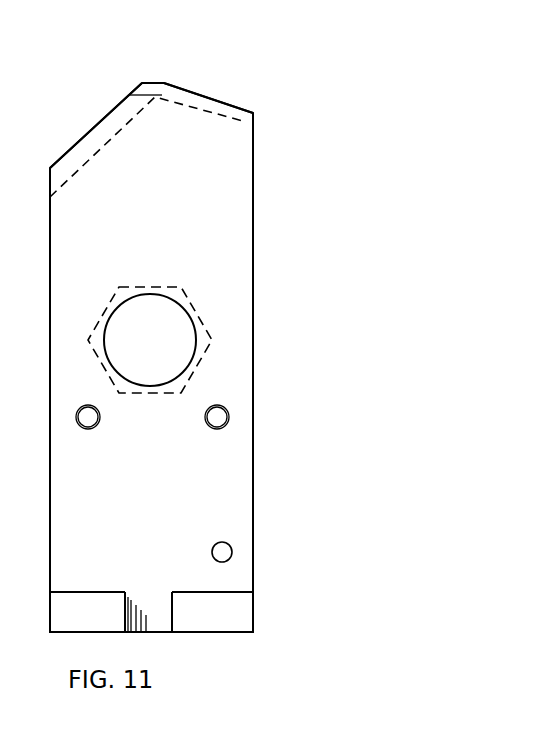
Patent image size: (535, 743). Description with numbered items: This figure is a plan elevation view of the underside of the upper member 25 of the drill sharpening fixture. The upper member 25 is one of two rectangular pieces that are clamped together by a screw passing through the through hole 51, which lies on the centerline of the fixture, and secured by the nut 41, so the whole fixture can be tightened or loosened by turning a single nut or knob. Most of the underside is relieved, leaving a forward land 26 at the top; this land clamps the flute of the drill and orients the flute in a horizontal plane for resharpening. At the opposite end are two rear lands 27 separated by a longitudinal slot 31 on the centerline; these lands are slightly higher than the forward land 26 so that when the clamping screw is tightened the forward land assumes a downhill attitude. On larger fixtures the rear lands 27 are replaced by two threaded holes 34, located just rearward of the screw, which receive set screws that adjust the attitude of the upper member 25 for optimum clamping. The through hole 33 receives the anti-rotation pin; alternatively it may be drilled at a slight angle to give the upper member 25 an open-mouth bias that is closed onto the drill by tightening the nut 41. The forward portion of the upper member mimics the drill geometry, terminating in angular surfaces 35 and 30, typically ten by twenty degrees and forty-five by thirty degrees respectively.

The upper fixture member 25 is at (242, 193).
The forward land 26 is at (152, 92).
The rear lands 27 is at (230, 608).
The angular surface 30 is at (252, 110).
The longitudinal slot 31 is at (157, 603).
The through hole 33 is at (232, 552).
The threaded holes 34 is at (229, 423).
The angular surface 35 is at (97, 127).
The nut 41 is at (198, 318).
The through hole 51 is at (198, 355).